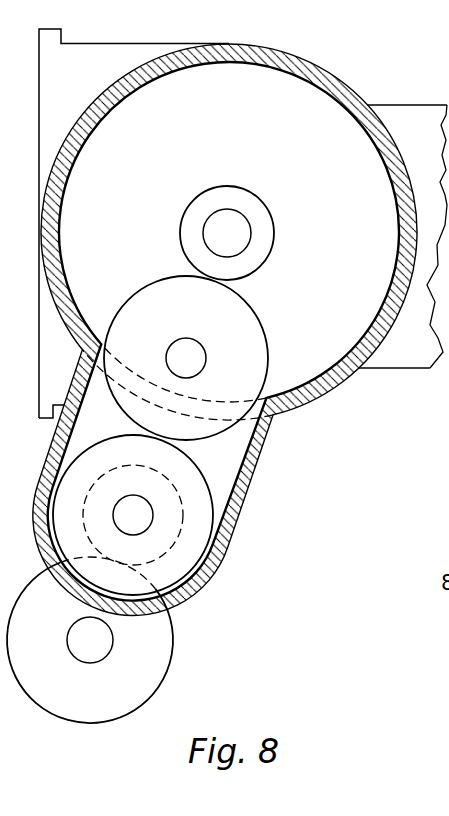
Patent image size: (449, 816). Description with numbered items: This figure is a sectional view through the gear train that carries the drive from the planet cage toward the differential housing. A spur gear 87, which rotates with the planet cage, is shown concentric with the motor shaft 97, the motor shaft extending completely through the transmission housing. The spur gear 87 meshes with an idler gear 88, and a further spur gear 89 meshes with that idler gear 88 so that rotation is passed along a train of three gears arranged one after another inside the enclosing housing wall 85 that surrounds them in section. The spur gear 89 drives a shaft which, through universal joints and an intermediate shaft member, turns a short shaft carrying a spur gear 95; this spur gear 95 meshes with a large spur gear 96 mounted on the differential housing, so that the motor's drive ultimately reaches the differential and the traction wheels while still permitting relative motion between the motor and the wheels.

The housing 85 is at (407, 358).
The spur gear 87 is at (274, 232).
The motor shaft 97 is at (247, 246).
The idler gear 88 is at (268, 352).
The spur gear 89 is at (213, 507).
The spur gear 95 is at (178, 537).
The large spur gear 96 is at (173, 640).